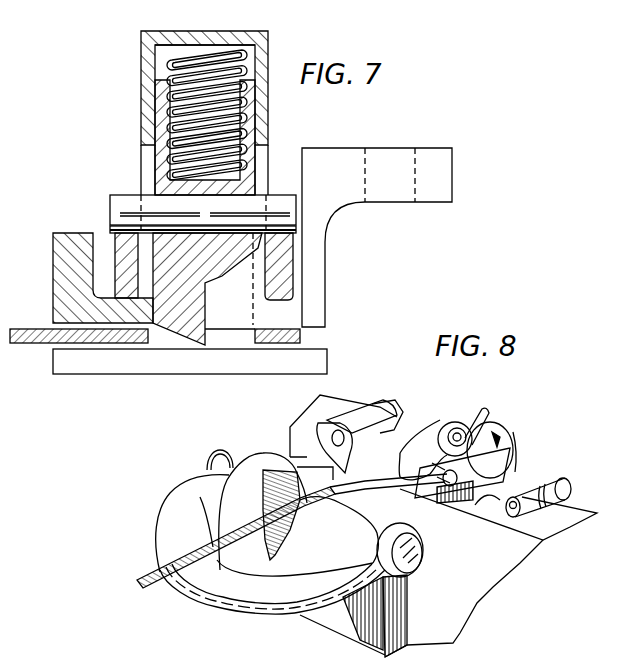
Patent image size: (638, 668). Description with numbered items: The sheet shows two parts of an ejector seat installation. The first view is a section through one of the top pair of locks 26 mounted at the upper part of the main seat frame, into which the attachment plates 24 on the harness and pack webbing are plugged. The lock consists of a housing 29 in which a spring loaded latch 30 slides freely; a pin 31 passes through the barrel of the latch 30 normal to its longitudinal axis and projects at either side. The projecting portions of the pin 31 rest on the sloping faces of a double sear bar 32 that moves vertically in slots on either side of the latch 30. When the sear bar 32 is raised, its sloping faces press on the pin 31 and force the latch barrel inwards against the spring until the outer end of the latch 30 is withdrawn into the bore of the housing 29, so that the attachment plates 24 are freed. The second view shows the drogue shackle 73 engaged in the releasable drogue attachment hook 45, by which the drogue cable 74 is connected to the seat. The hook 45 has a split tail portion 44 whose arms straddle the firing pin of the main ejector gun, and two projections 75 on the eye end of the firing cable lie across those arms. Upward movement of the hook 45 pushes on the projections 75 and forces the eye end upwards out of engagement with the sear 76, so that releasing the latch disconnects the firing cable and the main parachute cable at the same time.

In FIG. 7, the attachment plates 24 is at (30, 343).
In FIG. 7, the top pair of locks 26 is at (320, 316).
In FIG. 7, the housing 29 is at (147, 60).
In FIG. 7, the spring loaded latch 30 is at (157, 157).
In FIG. 7, the pin 31 is at (112, 205).
In FIG. 7, the double sear bar 32 is at (118, 255).
In FIG. 8, the split tail portion 44 is at (512, 435).
In FIG. 8, the drogue attachment hook 45 is at (333, 555).
In FIG. 8, the shackle 73 is at (237, 607).
In FIG. 8, the drogue cable 74 is at (143, 576).
In FIG. 8, the projections 75 is at (397, 445).
In FIG. 8, the sear 76 is at (483, 428).